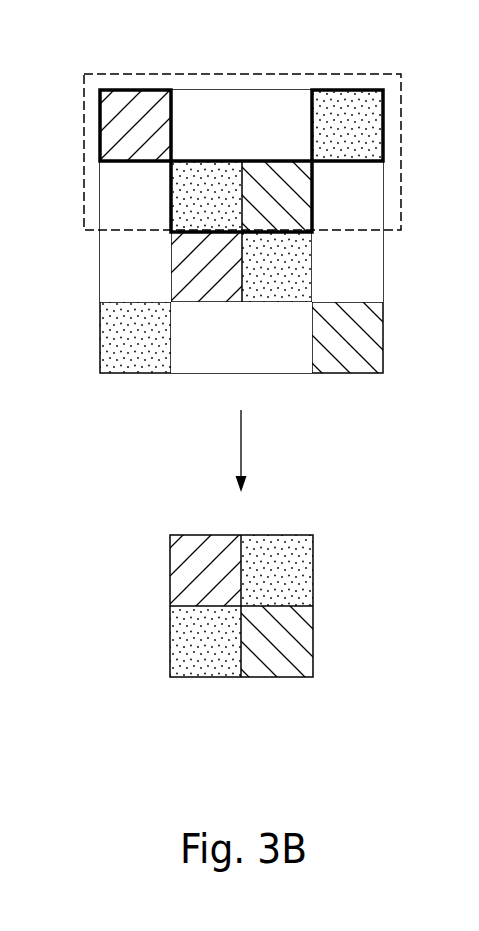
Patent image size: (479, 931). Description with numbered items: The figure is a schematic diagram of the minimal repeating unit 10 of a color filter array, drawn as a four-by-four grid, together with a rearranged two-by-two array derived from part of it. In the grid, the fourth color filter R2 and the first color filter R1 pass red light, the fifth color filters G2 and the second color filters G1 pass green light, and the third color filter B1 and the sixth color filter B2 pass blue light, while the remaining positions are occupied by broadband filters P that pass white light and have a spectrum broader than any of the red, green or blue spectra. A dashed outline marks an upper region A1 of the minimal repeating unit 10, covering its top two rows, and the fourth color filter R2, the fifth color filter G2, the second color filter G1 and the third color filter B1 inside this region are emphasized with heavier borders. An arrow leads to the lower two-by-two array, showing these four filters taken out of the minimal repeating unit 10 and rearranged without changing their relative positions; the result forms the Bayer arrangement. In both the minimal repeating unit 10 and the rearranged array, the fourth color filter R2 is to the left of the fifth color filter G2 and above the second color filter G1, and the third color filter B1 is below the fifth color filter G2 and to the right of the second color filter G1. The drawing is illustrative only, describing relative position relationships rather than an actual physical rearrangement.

The minimal repeating unit 10 is at (69, 31).
The upper region A1 is at (401, 141).
The fourth color filter R2 is at (170, 348).
The fifth color filter G2 is at (241, 348).
The second color filter G1 is at (241, 419).
The third color filter B1 is at (277, 419).
The first color filter R1 is at (206, 267).
The sixth color filter B2 is at (347, 337).
The broadband filter P is at (241, 231).